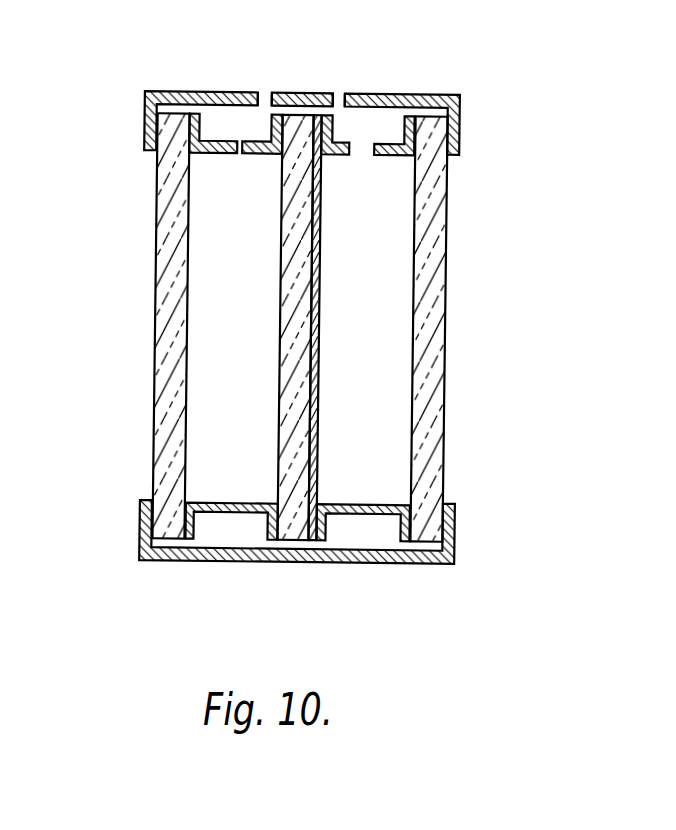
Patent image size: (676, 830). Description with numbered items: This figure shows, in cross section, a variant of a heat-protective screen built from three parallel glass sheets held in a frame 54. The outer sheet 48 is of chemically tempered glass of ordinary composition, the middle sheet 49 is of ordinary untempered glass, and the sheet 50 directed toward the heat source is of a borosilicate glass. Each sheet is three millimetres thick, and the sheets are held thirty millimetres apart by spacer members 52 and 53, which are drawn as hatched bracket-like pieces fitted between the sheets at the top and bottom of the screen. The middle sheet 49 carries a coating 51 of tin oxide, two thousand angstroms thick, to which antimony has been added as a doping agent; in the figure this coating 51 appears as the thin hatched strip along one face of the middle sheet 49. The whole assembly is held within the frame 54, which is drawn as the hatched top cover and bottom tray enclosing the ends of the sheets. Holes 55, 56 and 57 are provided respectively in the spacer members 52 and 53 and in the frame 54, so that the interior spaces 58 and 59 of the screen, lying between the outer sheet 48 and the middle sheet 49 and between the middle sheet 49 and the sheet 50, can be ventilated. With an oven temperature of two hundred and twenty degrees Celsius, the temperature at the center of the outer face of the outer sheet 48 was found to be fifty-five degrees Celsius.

The outer sheet 48 is at (173, 258).
The middle sheet 49 is at (290, 298).
The sheet directed toward the heat source 50 is at (427, 282).
The coating 51 is at (318, 303).
The spacer member 52 is at (243, 505).
The spacer member 53 is at (360, 510).
The frame 54 is at (455, 538).
The hole 55 is at (235, 142).
The hole 56 is at (368, 147).
The hole 57 is at (342, 93).
The interior space 58 is at (248, 390).
The interior space 59 is at (380, 393).